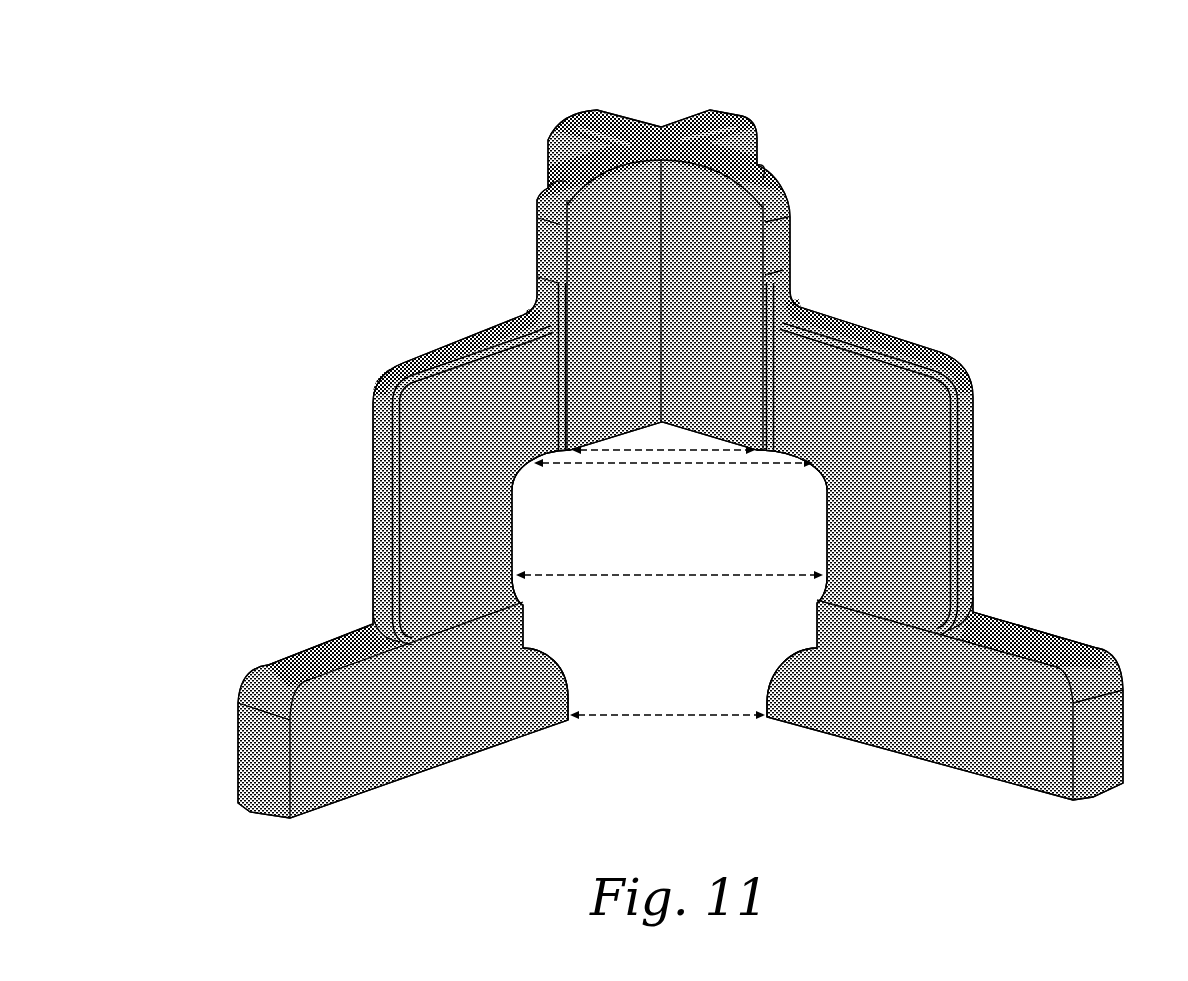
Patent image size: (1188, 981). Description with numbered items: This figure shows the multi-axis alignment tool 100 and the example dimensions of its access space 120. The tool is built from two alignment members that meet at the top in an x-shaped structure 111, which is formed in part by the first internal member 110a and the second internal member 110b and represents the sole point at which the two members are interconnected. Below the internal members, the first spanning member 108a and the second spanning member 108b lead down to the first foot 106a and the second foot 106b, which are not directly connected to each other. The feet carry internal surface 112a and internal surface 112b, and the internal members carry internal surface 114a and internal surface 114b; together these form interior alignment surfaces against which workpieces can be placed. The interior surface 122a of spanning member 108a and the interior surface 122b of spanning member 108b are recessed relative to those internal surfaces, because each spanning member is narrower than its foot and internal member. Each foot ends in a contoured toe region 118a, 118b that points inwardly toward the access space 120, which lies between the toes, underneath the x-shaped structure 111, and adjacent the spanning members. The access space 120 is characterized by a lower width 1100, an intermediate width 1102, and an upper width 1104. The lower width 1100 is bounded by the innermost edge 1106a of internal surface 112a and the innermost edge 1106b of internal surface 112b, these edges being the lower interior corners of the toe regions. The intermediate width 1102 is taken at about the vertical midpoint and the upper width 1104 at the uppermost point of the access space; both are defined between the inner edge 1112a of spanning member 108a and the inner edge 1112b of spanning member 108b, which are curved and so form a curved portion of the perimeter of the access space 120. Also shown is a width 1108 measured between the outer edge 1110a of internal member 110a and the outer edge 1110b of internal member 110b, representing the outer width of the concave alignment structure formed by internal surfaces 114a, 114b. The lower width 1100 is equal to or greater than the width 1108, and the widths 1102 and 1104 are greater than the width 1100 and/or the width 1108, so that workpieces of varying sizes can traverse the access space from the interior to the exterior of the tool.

The multi-axis alignment tool 100 is at (280, 68).
The x-shaped structure 111 is at (660, 92).
The first internal member 110a is at (555, 190).
The second internal member 110b is at (777, 188).
The outer edge of the first internal member 1110a is at (567, 268).
The outer edge of the second internal member 1110b is at (785, 265).
The internal surface of the first internal member 114a is at (598, 320).
The internal surface of the second internal member 114b is at (730, 320).
The first spanning member 108a is at (392, 378).
The second spanning member 108b is at (960, 372).
The interior surface of the first spanning member 122a is at (432, 487).
The interior surface of the second spanning member 122b is at (928, 487).
The first foot 106a is at (270, 690).
The second foot 106b is at (1085, 680).
The internal surface of the first foot 112a is at (468, 733).
The internal surface of the second foot 112b is at (967, 733).
The toe region 118a is at (615, 669).
The toe region 118b is at (771, 700).
The innermost edge of the internal surface of the first foot 1106a is at (570, 718).
The innermost edge of the internal surface of the second foot 1106b is at (765, 720).
The inner edge of the first spanning member 1112a is at (589, 535).
The inner edge of the second spanning member 1112b is at (820, 480).
The width 1108 is at (662, 452).
The upper width 1104 is at (645, 467).
The intermediate width 1102 is at (665, 575).
The lower width 1100 is at (665, 720).
The access space 120 is at (687, 682).